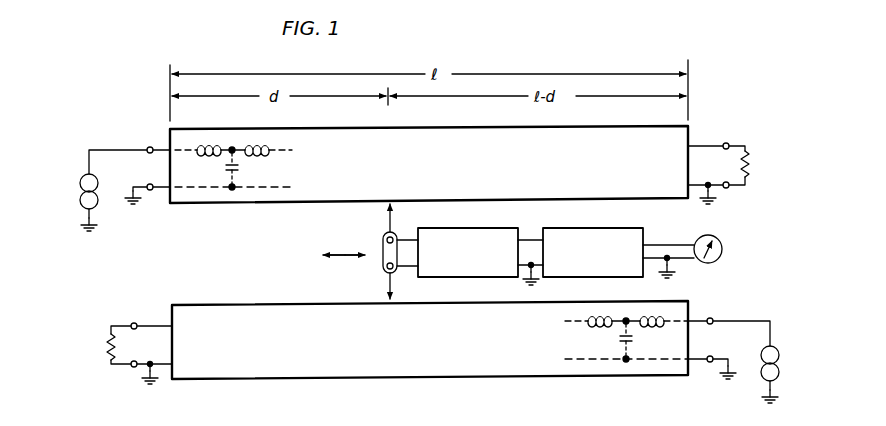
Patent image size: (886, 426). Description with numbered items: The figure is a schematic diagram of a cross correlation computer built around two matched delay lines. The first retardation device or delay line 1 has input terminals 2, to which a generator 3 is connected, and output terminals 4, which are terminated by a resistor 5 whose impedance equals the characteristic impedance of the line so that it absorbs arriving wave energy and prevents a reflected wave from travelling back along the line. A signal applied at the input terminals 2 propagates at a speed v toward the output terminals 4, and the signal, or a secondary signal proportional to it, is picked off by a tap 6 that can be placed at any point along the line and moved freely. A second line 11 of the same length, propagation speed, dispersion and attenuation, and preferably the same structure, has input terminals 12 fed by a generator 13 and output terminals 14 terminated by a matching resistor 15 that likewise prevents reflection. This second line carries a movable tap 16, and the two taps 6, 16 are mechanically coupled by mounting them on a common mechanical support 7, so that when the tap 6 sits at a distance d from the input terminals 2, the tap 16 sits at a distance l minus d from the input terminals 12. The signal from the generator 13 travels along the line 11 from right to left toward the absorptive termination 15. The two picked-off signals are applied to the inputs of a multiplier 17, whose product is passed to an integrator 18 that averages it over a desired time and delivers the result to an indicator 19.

The delay line 1 is at (262, 203).
The input terminals 2 is at (147, 184).
The generator 3 is at (79, 178).
The output terminals 4 is at (728, 182).
The resistor 5 is at (757, 167).
The tap 6 is at (388, 208).
The common mechanical support 7 is at (382, 242).
The second line 11 is at (231, 306).
The input terminals 12 is at (712, 357).
The generator 13 is at (779, 353).
The output terminals 14 is at (136, 361).
The resistor 15 is at (105, 348).
The movable tap 16 is at (388, 297).
The multiplier 17 is at (452, 229).
The integrator 18 is at (570, 229).
The indicator 19 is at (722, 245).